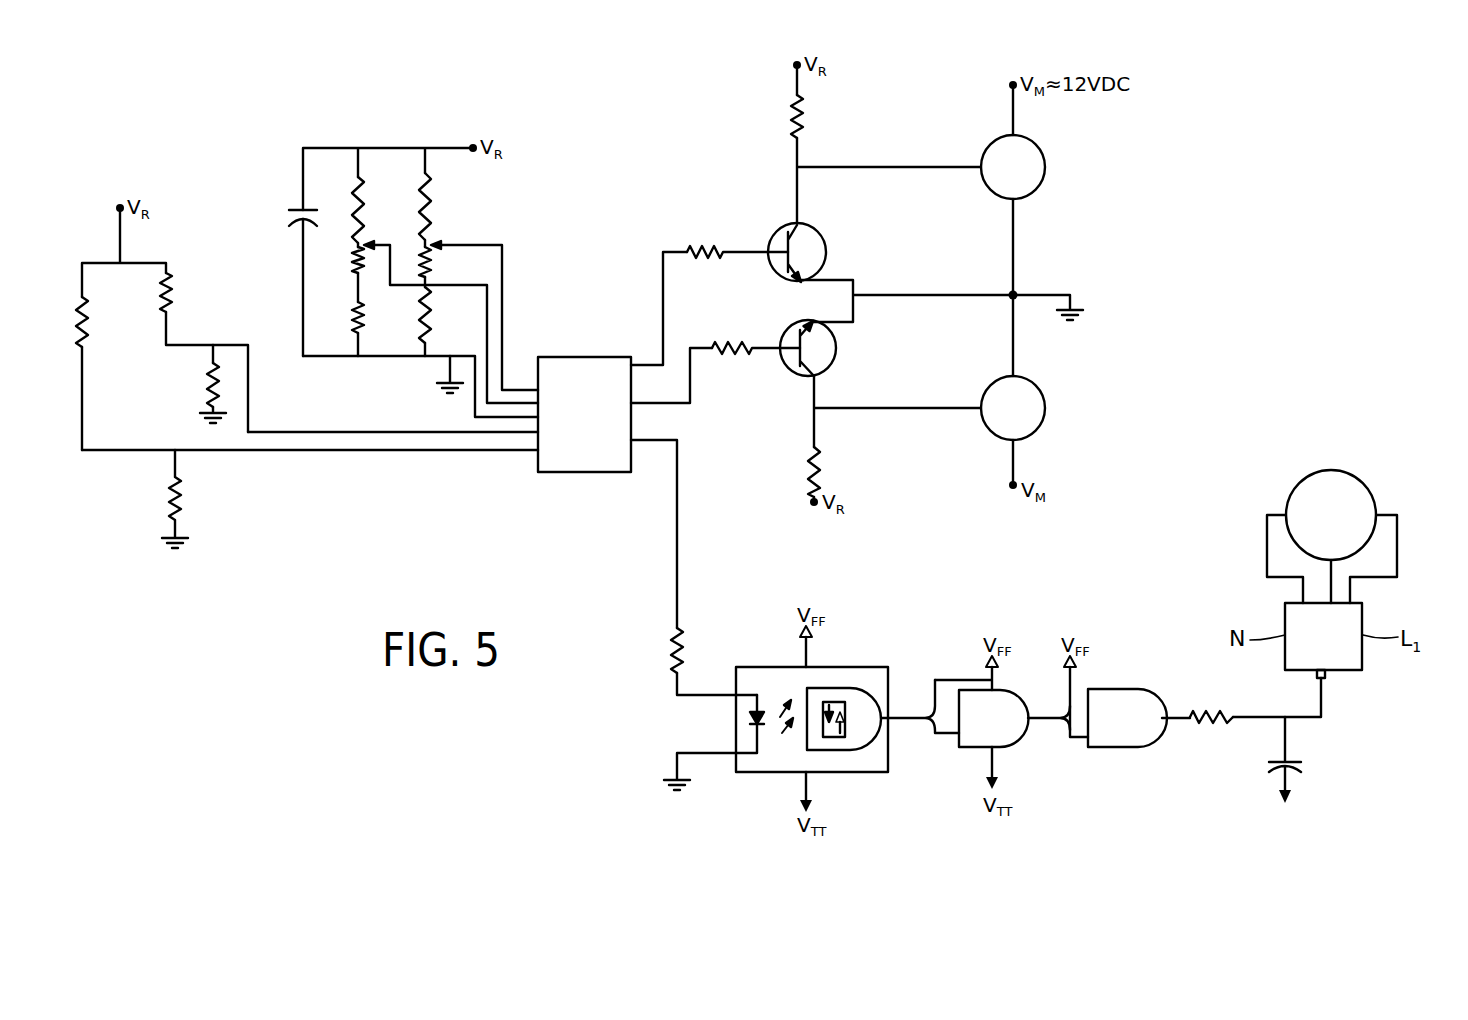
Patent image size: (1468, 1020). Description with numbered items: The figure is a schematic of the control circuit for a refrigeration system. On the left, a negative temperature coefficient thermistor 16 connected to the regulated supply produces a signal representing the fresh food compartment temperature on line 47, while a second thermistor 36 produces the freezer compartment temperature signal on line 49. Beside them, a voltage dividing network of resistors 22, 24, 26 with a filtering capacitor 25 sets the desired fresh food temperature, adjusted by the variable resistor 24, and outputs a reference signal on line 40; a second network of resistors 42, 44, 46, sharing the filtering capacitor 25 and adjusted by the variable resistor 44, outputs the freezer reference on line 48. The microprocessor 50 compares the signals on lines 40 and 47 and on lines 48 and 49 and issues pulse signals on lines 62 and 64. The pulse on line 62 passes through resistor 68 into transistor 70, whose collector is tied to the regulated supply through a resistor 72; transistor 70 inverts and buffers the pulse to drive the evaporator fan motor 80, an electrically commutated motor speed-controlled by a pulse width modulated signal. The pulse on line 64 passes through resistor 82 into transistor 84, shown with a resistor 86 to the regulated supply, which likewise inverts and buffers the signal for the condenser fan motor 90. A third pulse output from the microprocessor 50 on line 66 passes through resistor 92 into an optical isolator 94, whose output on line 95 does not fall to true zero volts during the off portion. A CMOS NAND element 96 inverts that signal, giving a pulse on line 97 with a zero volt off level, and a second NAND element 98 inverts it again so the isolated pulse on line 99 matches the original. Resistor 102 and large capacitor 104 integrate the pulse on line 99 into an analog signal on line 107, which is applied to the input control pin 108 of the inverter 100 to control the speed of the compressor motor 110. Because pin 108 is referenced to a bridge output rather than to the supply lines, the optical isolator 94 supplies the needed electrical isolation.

The negative temperature coefficient thermistor 16 is at (86, 318).
The resistor 22 is at (360, 187).
The variable resistor 24 is at (357, 248).
The filtering capacitor 25 is at (294, 208).
The resistor 26 is at (368, 304).
The negative temperature coefficient thermistor 36 is at (172, 290).
The line 40 is at (490, 313).
The resistor 42 is at (432, 190).
The variable resistor 44 is at (427, 236).
The resistor 46 is at (437, 312).
The line 47 is at (462, 452).
The line 48 is at (520, 388).
The line 49 is at (370, 431).
The microprocessor 50 is at (571, 425).
The line 62 is at (662, 300).
The line 64 is at (690, 383).
The output line 66 is at (678, 488).
The resistor 68 is at (695, 245).
The transistor 70 is at (827, 228).
The resistor 72 is at (802, 102).
The evaporator fan motor 80 is at (1045, 147).
The resistor 82 is at (728, 340).
The transistor 84 is at (838, 350).
The resistor 86 is at (822, 467).
The condenser fan motor 90 is at (1043, 388).
The resistor 92 is at (672, 645).
The optical isolator 94 is at (843, 665).
The line 95 is at (905, 720).
The CMOS NAND element 96 is at (1007, 747).
The line 97 is at (1045, 717).
The NAND element 98 is at (1113, 688).
The line 99 is at (1170, 717).
The inverter 100 is at (1363, 615).
The resistor 102 is at (1213, 728).
The large capacitor 104 is at (1293, 750).
The line 107 is at (1323, 697).
The input control pin 108 is at (1315, 675).
The compressor motor 110 is at (1340, 471).